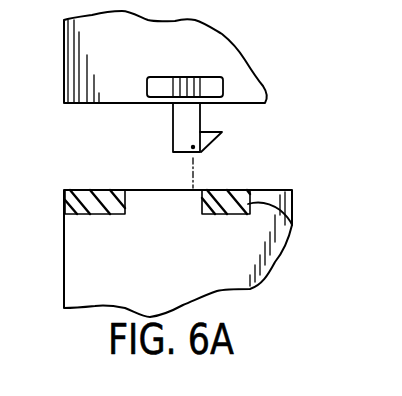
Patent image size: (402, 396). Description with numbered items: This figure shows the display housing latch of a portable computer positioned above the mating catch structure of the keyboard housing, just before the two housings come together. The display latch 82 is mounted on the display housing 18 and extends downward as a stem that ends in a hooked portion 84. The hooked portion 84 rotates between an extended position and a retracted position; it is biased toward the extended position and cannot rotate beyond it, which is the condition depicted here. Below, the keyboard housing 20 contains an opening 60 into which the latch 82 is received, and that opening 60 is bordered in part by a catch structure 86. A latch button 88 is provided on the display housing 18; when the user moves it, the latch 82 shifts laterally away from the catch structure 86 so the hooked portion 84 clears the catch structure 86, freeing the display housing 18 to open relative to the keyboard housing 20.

The display housing 18 is at (117, 53).
The latch button 88 is at (215, 77).
The display latch 82 is at (173, 121).
The hooked portion 84 is at (222, 133).
The keyboard housing 20 is at (128, 288).
The opening 60 is at (170, 227).
The catch structure 86 is at (292, 224).